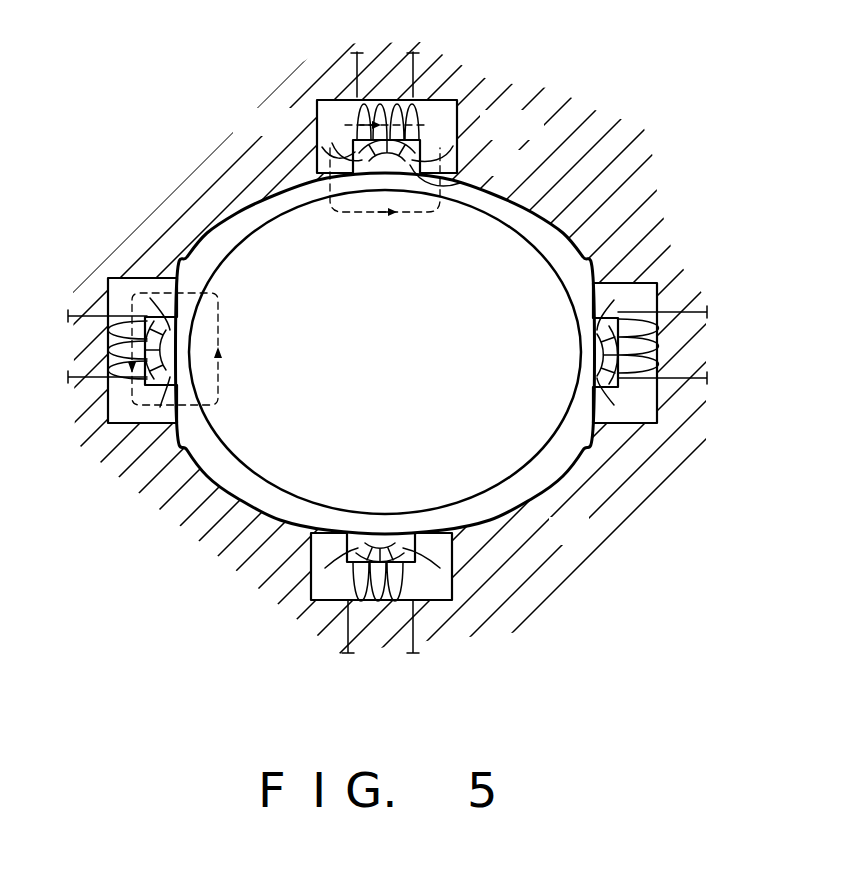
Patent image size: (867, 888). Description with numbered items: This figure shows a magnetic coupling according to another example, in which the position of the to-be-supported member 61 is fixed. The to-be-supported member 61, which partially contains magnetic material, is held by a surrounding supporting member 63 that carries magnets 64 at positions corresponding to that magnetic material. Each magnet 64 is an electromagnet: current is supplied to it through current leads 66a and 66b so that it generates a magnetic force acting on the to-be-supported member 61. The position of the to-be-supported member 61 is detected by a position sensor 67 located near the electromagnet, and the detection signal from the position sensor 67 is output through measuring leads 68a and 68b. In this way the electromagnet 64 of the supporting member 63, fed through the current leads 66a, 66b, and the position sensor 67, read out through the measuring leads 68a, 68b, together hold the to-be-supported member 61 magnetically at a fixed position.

The to-be-supported member 61 is at (523, 448).
The supporting member 63 is at (178, 210).
The magnet 64 is at (330, 100).
The current lead 66a is at (360, 62).
The current lead 66b is at (416, 66).
The position sensor 67 is at (462, 174).
The measuring lead 68a is at (318, 160).
The measuring lead 68b is at (458, 150).